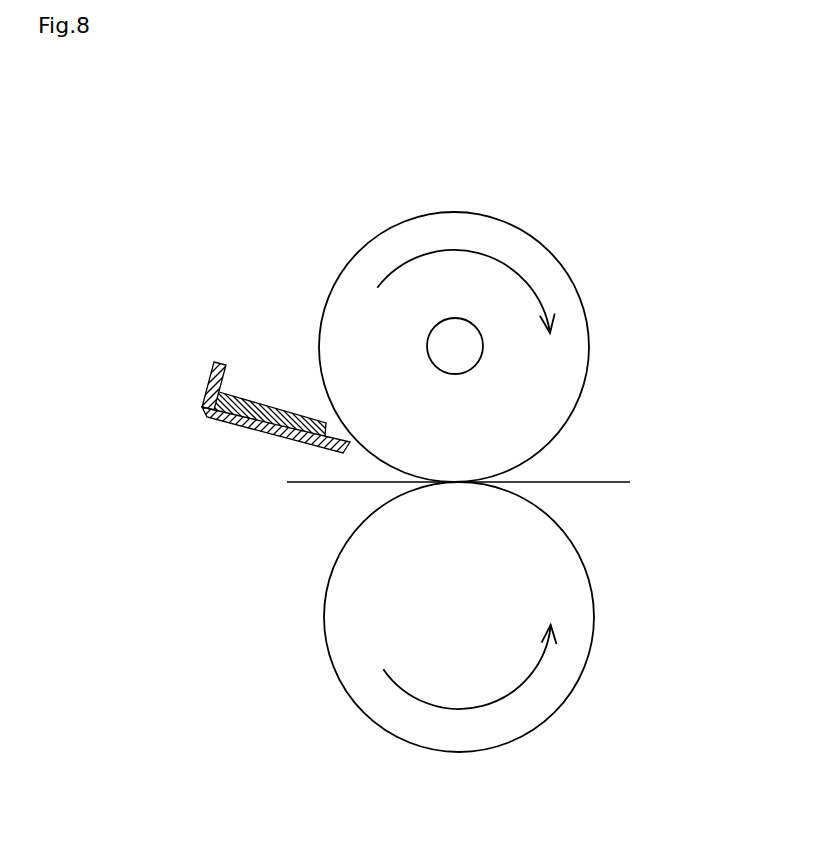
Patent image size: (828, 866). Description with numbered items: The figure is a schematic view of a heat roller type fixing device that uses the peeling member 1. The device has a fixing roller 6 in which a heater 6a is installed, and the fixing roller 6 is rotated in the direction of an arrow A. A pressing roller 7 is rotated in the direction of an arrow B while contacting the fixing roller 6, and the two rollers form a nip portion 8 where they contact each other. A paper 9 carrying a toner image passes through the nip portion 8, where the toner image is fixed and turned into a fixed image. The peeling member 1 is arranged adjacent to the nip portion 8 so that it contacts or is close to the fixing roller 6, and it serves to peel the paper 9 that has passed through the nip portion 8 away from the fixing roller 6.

The peeling member 1 is at (278, 385).
The fixing roller 6 is at (563, 300).
The heater 6a is at (469, 352).
The pressing roller 7 is at (565, 665).
The nip portion 8 is at (387, 490).
The paper 9 is at (592, 483).
The rotation direction of the fixing roller A is at (477, 252).
The rotation direction of the pressing roller B is at (478, 703).